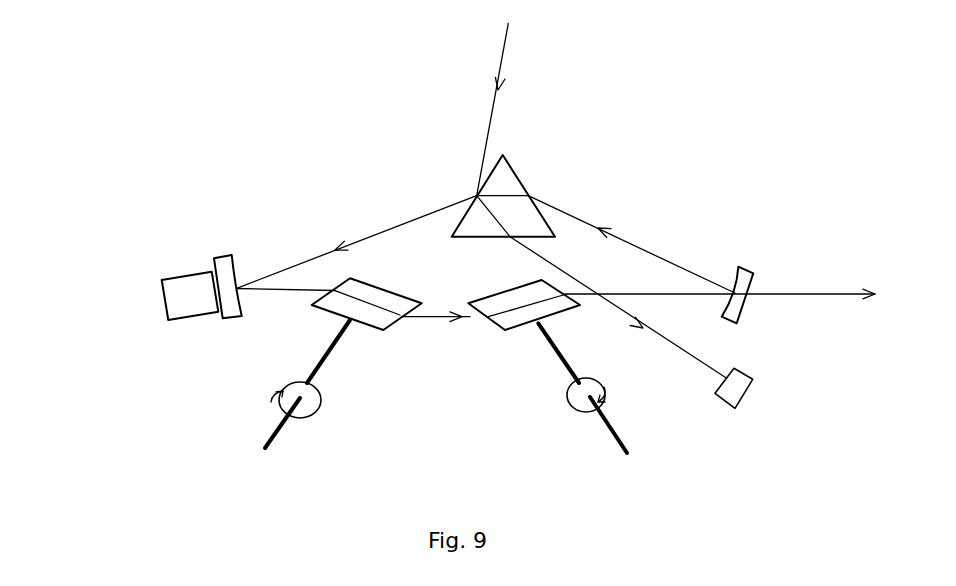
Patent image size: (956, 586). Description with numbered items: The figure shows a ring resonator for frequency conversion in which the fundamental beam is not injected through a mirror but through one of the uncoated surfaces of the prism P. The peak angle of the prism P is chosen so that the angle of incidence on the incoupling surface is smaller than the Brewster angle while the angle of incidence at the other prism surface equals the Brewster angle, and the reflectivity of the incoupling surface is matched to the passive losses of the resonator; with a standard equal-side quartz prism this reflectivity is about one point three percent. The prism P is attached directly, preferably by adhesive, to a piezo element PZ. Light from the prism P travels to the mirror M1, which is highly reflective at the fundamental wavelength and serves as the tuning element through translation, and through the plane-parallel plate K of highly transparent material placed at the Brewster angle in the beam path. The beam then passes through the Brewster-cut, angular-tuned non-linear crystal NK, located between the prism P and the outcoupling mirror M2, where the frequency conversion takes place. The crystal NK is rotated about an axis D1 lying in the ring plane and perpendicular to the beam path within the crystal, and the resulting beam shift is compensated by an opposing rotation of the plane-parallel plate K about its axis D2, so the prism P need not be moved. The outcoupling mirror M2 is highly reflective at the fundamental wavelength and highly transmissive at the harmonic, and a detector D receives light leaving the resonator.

The prism P is at (532, 148).
The mirror M1 is at (269, 190).
The piezo element PZ is at (141, 254).
The outcoupling mirror M2 is at (794, 228).
The detector D is at (777, 381).
The plane-parallel plate K is at (225, 362).
The non-linear crystal NK is at (499, 385).
The axis of rotation of the crystal D1 is at (583, 402).
The axis of symmetry of the prism D2 is at (290, 397).